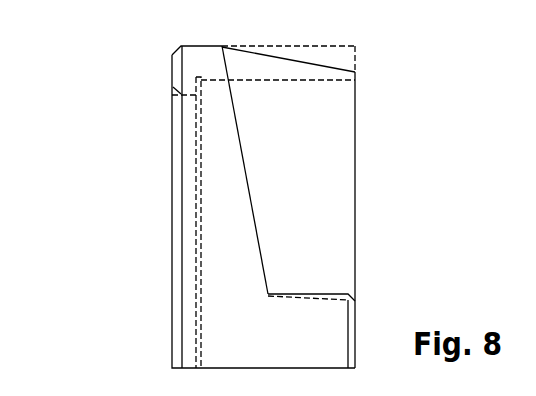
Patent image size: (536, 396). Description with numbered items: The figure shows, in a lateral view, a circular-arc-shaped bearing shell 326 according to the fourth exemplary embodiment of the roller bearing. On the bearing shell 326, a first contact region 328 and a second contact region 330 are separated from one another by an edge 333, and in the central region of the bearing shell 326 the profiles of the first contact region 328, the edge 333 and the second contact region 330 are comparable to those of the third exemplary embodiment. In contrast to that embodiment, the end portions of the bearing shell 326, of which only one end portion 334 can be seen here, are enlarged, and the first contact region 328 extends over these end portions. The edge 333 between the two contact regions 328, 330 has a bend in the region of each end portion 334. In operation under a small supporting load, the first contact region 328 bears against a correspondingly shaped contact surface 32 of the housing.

The bearing shell 326 is at (132, 83).
The contact surface 32 is at (337, 47).
The second contact region 330 is at (327, 193).
The first contact region 328 is at (248, 270).
The edge 333 is at (248, 202).
The end portion 334 is at (126, 320).